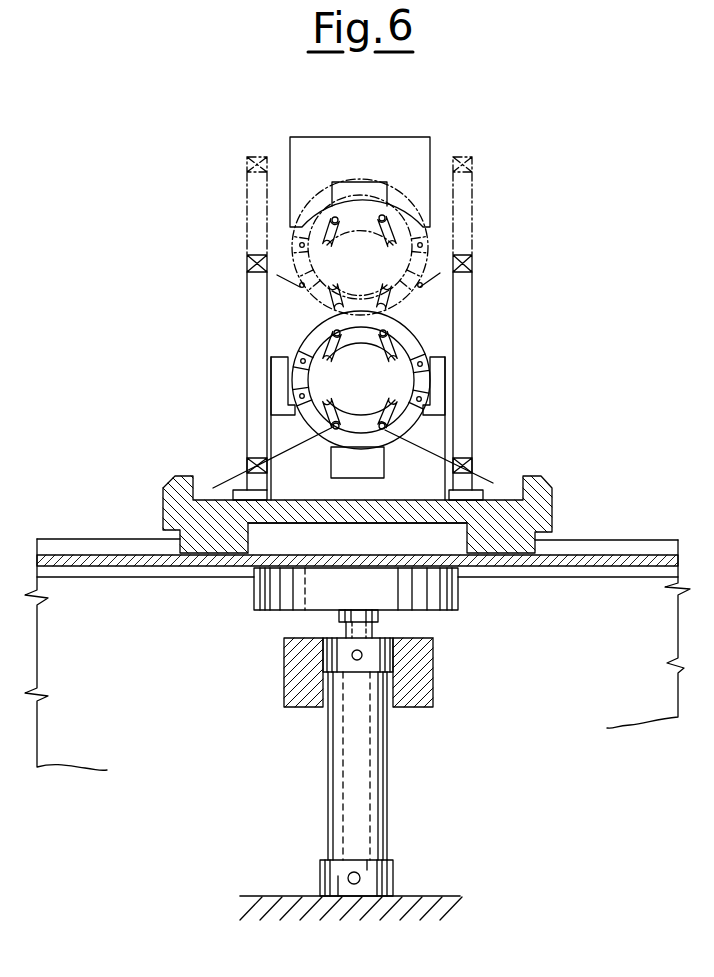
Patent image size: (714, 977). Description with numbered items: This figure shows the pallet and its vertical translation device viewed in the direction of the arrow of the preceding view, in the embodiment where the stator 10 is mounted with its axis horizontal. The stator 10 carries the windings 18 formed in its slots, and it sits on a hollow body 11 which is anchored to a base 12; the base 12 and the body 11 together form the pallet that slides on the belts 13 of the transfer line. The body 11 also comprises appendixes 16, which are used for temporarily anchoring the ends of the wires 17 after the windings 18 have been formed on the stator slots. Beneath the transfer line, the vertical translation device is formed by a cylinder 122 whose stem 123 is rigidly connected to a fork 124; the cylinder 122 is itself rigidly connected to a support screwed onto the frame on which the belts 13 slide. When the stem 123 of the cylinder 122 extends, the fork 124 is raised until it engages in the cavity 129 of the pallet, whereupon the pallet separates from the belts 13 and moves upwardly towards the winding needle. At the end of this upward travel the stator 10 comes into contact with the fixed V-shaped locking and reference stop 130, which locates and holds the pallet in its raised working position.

The V-shaped locking and reference stop 130 is at (417, 150).
The appendixes 16 is at (253, 192).
The wires 17 is at (238, 253).
The windings 18 is at (386, 218).
The stator 10 is at (360, 230).
The hollow body 11 is at (430, 427).
The base 12 is at (530, 515).
The belts 13 is at (82, 558).
The fork 124 is at (270, 588).
The cavity 129 is at (437, 523).
The stem 123 is at (365, 629).
The cylinder 122 is at (370, 687).